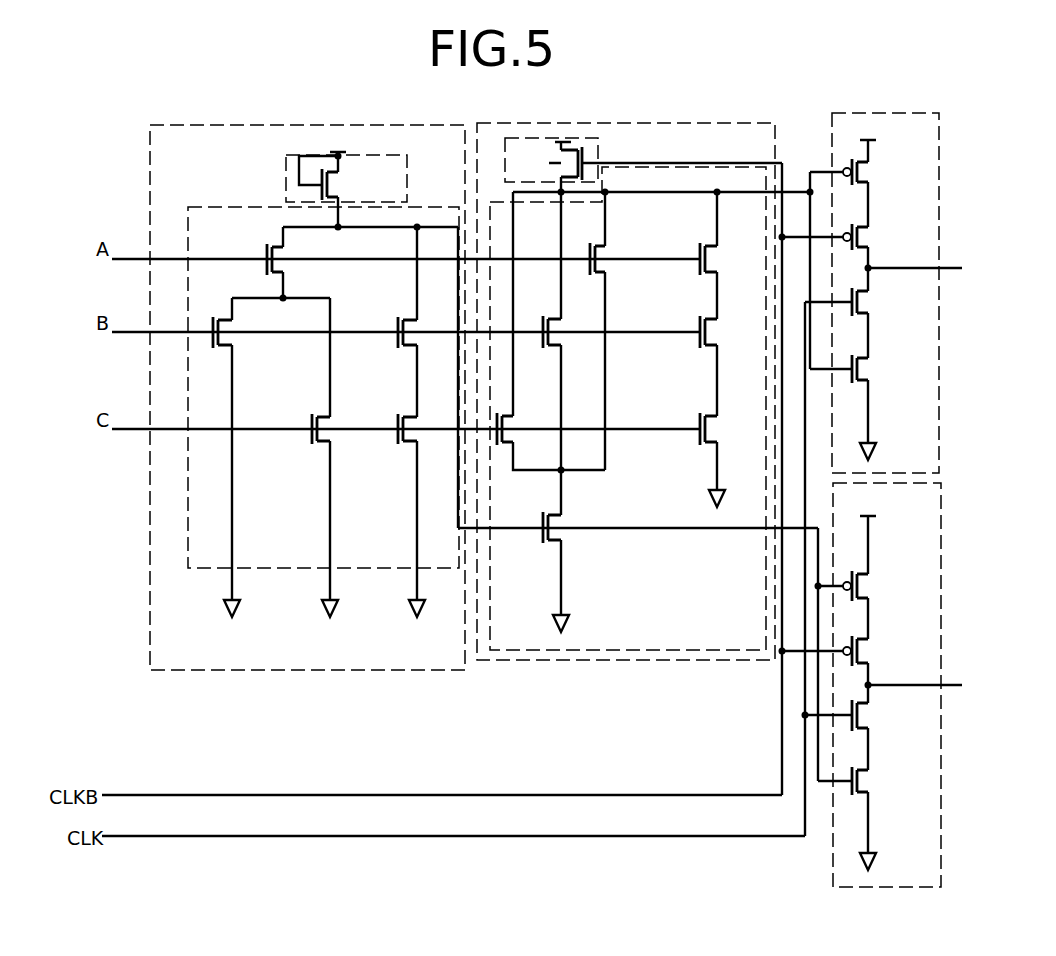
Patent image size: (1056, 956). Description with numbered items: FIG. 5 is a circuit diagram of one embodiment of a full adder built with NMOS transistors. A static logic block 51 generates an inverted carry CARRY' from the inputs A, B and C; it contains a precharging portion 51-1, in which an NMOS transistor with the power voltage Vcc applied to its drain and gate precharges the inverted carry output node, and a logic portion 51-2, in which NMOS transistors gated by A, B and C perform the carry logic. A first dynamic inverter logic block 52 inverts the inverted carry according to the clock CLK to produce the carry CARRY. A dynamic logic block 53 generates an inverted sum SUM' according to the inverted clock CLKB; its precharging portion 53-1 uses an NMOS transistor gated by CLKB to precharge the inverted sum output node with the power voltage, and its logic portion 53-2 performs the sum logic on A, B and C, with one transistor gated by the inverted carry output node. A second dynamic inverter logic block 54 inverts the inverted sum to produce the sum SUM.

The static logic block 51 is at (352, 670).
The precharging portion 51-1 is at (407, 163).
The logic portion 51-2 is at (288, 568).
The first dynamic inverter logic block 52 is at (941, 727).
The dynamic logic block 53 is at (672, 660).
The precharging portion 53-1 is at (614, 143).
The logic portion 53-2 is at (705, 167).
The second dynamic inverter logic block 54 is at (939, 195).